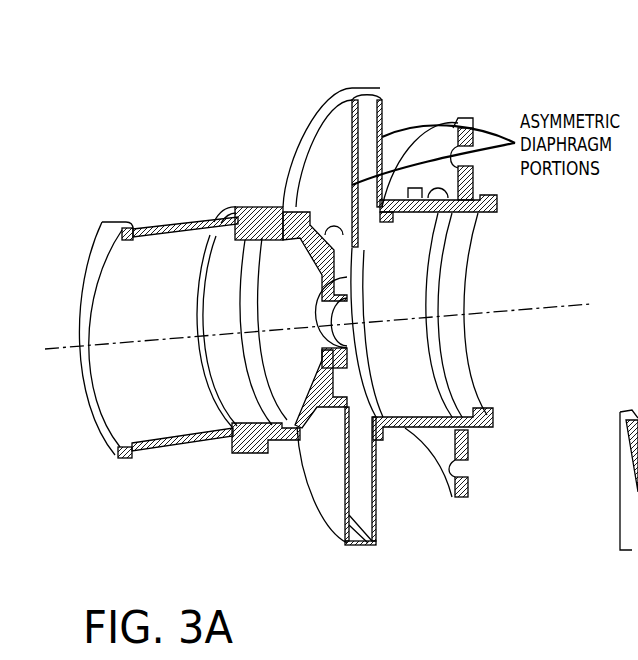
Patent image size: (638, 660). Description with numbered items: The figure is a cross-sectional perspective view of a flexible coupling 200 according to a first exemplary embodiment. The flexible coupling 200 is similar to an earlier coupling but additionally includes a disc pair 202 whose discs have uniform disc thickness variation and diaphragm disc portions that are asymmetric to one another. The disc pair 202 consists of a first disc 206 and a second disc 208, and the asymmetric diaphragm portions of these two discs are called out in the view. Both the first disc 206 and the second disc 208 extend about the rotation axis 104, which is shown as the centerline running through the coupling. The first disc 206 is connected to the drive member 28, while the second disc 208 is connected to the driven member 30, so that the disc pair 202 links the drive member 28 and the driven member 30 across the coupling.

The drive member 28 is at (180, 440).
The driven member 30 is at (402, 430).
The rotation axis 104 is at (54, 350).
The flexible coupling 200 is at (238, 484).
The disc pair 202 is at (300, 88).
The first disc 206 is at (352, 148).
The second disc 208 is at (382, 118).